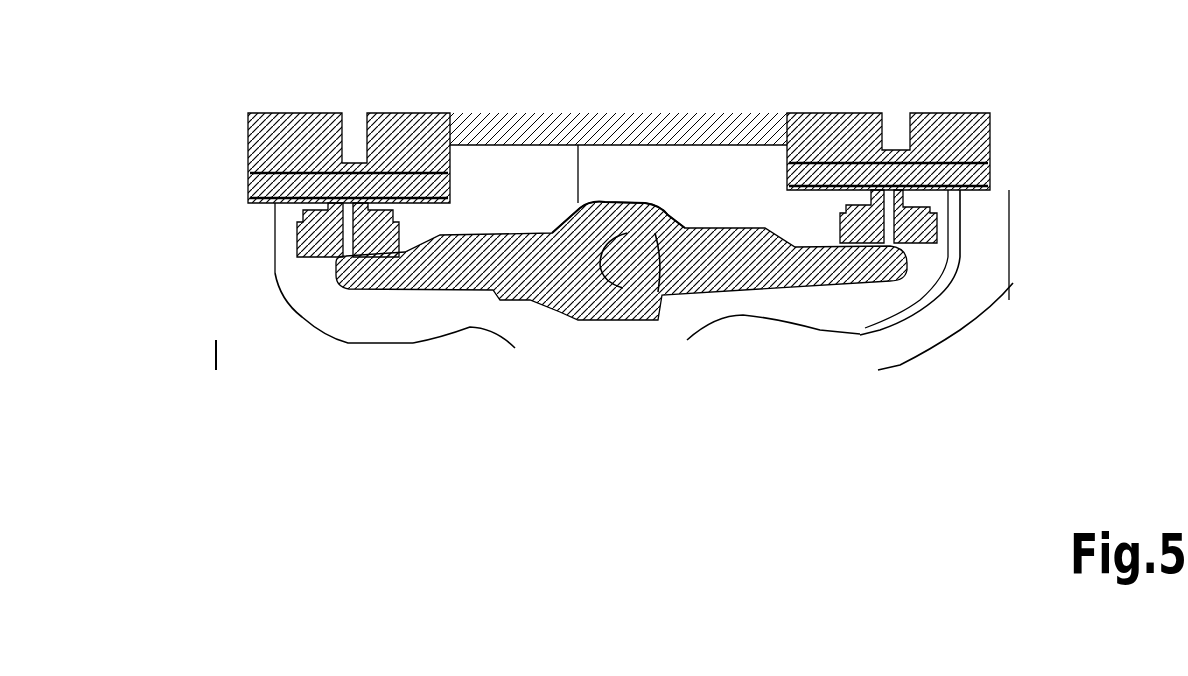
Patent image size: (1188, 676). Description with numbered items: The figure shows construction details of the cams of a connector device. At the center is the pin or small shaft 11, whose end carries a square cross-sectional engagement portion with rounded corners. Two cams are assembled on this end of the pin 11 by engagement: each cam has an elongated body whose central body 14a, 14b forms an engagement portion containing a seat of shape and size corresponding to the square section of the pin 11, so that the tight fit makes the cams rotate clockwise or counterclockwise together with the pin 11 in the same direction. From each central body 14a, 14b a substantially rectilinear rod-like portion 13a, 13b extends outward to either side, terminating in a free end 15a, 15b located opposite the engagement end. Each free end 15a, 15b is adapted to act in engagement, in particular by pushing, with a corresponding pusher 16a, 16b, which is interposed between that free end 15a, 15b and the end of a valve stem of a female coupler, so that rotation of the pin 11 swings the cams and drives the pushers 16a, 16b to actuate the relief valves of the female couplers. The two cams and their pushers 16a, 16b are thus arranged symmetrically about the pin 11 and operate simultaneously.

The pin 11 is at (627, 270).
The rod-like portion 13a is at (432, 290).
The rod-like portion 13b is at (765, 262).
The central body 14a is at (563, 267).
The central body 14b is at (598, 203).
The free end 15a is at (345, 278).
The free end 15b is at (897, 262).
The pusher 16a is at (297, 235).
The pusher 16b is at (963, 213).